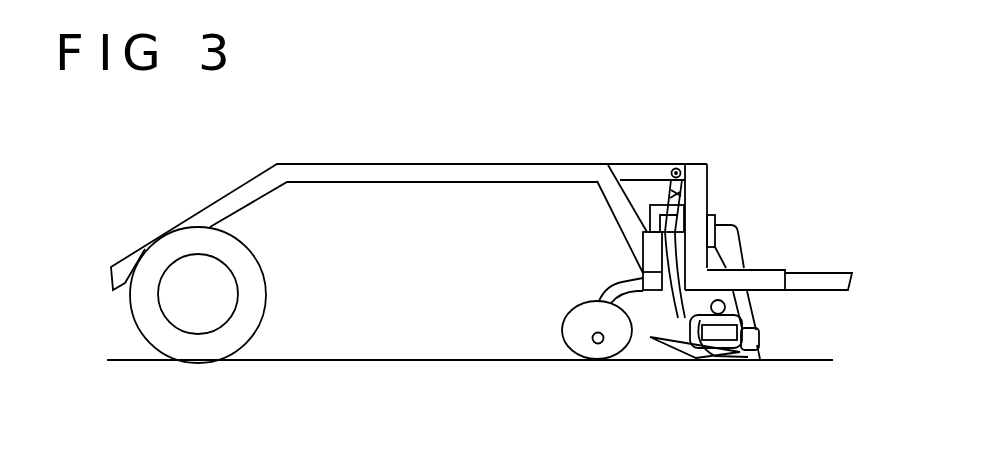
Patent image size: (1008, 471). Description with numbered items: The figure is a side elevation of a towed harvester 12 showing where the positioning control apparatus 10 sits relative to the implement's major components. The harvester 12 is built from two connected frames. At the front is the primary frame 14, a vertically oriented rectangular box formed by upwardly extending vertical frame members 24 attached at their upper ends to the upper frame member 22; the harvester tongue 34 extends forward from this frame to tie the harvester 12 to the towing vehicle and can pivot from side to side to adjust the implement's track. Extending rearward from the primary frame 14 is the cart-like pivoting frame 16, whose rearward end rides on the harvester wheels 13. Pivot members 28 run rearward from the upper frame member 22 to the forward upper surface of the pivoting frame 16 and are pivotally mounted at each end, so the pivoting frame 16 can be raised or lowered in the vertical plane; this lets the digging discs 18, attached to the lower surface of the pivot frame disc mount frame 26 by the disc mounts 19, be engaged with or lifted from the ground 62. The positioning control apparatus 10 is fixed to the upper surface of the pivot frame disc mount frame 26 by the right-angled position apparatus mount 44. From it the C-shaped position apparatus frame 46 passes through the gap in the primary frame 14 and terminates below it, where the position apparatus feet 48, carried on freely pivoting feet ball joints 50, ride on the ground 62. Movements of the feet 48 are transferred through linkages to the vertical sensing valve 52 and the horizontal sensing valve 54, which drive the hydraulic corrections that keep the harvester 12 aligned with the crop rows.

The positioning control apparatus 10 is at (773, 368).
The harvester 12 is at (439, 152).
The harvester wheels 13 is at (182, 352).
The primary frame 14 is at (707, 163).
The pivoting frame 16 is at (497, 173).
The digging discs 18 is at (597, 360).
The disc mounts 19 is at (637, 291).
The upper frame member 22 is at (707, 172).
The vertical frame members 24 is at (711, 193).
The pivot frame disc mount frame 26 is at (643, 278).
The pivot members 28 is at (652, 162).
The harvester tongue 34 is at (841, 270).
The position apparatus mount 44 is at (645, 238).
The position apparatus frame 46 is at (744, 247).
The position apparatus feet 48 is at (695, 360).
The feet ball joint 50 is at (758, 335).
The vertical sensing valve 52 is at (733, 303).
The horizontal sensing valve 54 is at (733, 360).
The ground 62 is at (330, 364).